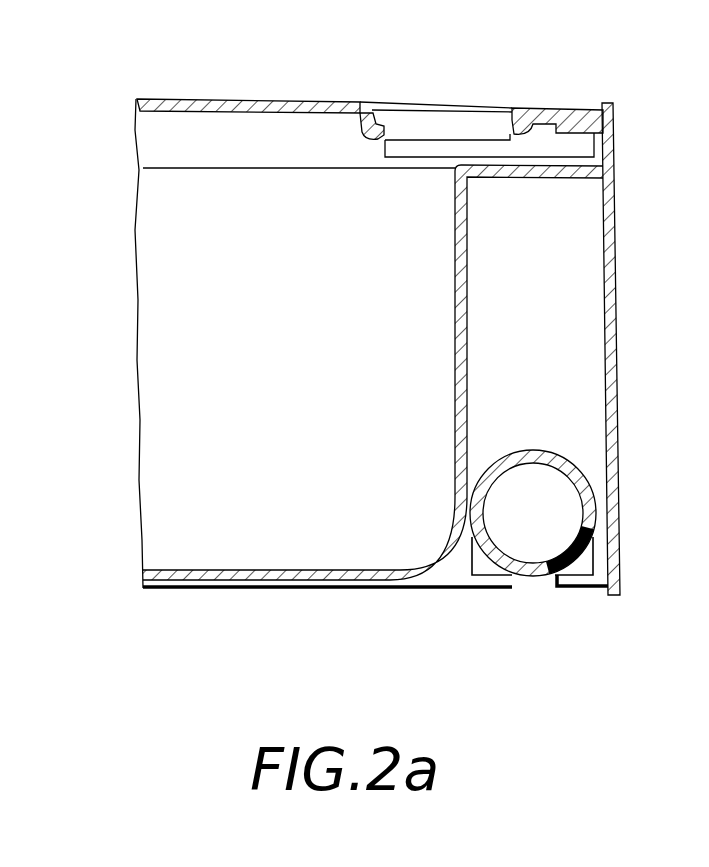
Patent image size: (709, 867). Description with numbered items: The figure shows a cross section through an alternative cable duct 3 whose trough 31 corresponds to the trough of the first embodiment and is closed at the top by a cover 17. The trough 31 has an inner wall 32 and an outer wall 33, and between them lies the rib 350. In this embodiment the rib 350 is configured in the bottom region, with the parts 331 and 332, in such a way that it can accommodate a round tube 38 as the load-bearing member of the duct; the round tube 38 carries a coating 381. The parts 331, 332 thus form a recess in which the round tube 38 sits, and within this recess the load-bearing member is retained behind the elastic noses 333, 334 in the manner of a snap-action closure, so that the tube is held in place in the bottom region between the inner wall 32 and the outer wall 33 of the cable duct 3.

The cover 17 is at (300, 106).
The trough 31 is at (303, 288).
The inner wall 32 is at (329, 572).
The outer wall 33 is at (582, 349).
The part 331 is at (620, 538).
The part 332 is at (463, 472).
The elastic nose 333 is at (487, 583).
The elastic nose 334 is at (587, 582).
The rib 350 is at (573, 259).
The round tube 38 is at (548, 580).
The coating 381 is at (530, 578).
The cable duct 3 is at (488, 619).